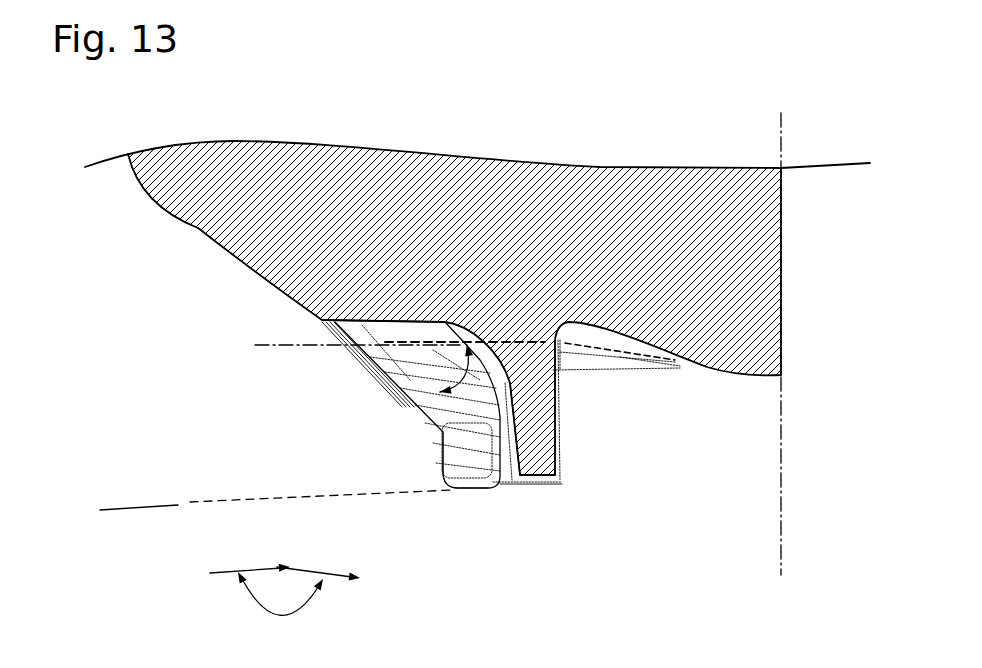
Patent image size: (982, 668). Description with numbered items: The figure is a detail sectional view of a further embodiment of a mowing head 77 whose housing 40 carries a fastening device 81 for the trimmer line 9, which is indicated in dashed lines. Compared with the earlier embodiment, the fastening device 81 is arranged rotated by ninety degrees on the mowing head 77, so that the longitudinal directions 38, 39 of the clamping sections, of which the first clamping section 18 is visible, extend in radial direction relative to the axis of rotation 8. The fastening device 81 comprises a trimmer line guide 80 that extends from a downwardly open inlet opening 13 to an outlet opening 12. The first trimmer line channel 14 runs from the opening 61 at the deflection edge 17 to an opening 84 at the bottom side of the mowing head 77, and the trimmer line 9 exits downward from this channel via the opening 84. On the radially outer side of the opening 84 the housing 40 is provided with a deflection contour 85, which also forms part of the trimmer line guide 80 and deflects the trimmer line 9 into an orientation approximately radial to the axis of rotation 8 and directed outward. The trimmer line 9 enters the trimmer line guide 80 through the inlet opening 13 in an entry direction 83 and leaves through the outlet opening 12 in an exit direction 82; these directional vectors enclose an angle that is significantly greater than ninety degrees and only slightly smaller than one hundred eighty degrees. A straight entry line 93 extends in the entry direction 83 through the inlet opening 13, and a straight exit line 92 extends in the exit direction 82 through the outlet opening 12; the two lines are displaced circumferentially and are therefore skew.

The mowing head 77 is at (380, 111).
The axis of rotation 8 is at (784, 130).
The housing 40 is at (215, 220).
The deflection edge 17 is at (355, 334).
The clamping section 18 is at (392, 330).
The longitudinal direction 38 is at (379, 369).
The longitudinal direction 39 is at (272, 348).
The opening 61 is at (372, 355).
The straight entry line 93 is at (147, 504).
The trimmer line 9 is at (320, 492).
The deflection contour 85 is at (492, 477).
The inlet opening 13 is at (449, 502).
The opening 84 is at (510, 484).
The fastening device 81 is at (542, 496).
The trimmer line guide 80 is at (525, 450).
The first trimmer line channel 14 is at (483, 363).
The outlet opening 12 is at (569, 356).
The straight exit line 92 is at (676, 361).
The entry direction 83 is at (250, 559).
The exit direction 82 is at (318, 563).